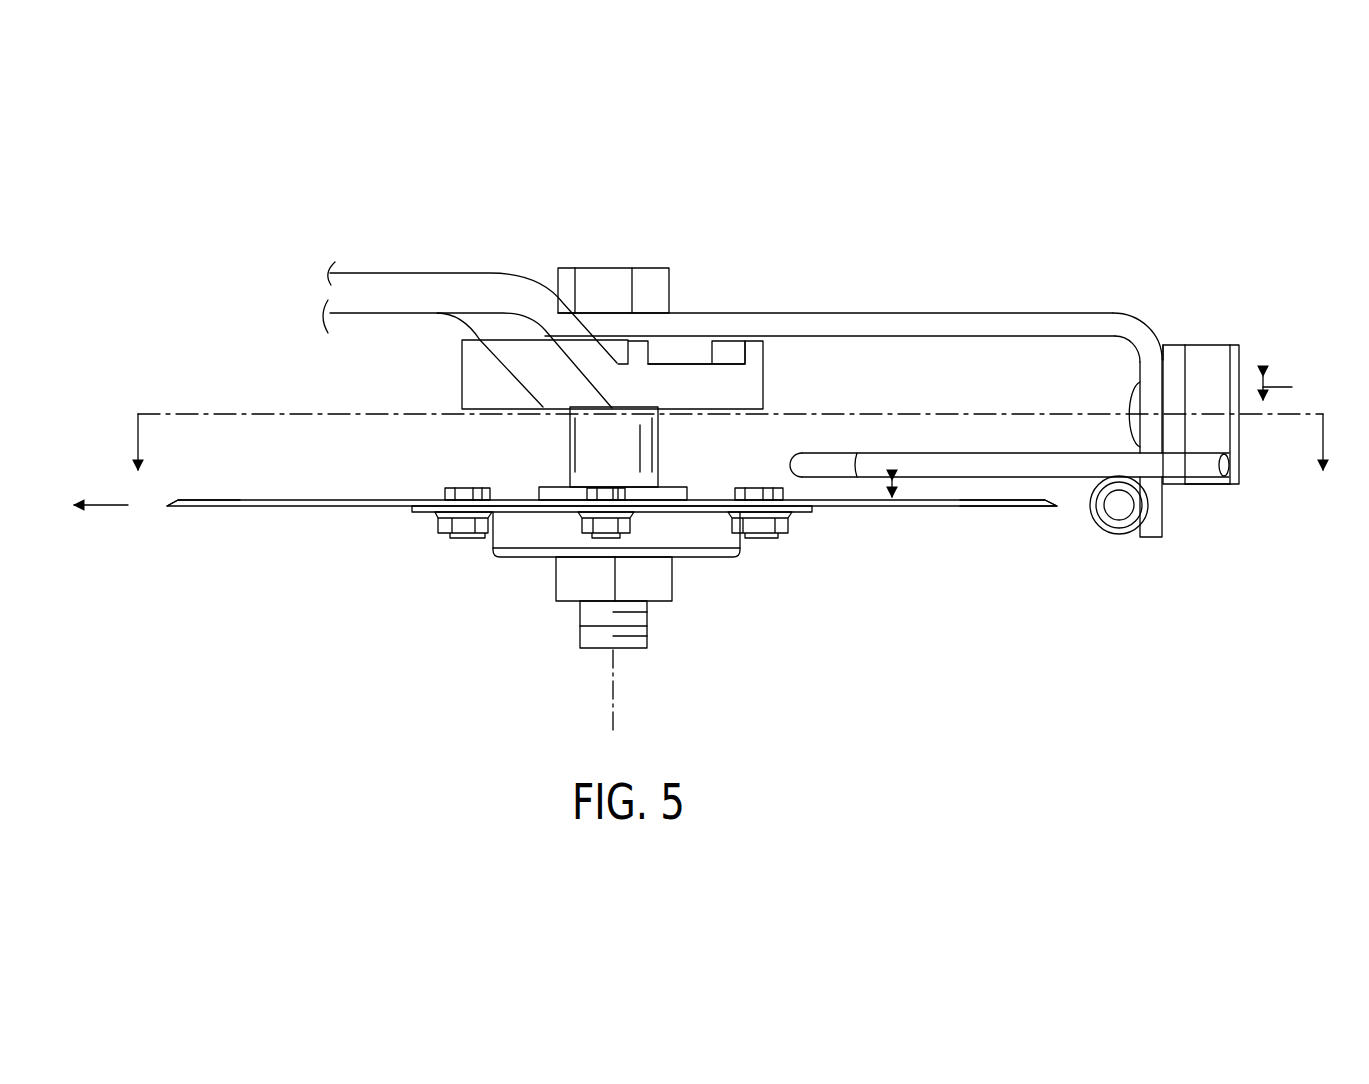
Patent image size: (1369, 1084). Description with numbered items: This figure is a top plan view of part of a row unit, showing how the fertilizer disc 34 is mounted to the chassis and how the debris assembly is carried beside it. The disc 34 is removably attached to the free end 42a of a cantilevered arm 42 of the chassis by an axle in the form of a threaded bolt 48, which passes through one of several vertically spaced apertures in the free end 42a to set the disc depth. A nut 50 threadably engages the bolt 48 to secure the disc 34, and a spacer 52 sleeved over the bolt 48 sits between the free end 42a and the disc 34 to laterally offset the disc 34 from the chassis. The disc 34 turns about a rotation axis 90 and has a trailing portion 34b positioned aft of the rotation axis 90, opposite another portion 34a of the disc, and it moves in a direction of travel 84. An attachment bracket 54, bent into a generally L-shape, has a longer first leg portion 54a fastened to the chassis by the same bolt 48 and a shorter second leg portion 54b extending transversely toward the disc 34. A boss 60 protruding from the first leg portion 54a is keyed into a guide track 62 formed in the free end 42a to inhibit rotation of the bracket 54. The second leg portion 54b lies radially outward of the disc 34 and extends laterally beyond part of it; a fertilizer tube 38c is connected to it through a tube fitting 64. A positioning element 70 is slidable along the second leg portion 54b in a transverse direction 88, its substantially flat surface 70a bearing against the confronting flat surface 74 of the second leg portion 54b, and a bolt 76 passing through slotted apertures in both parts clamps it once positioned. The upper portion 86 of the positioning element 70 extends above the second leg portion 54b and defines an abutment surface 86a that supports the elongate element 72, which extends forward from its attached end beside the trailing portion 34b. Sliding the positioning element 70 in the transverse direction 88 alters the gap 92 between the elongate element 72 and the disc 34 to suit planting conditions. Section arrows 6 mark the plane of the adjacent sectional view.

The fertilizer disc 34 is at (328, 506).
The first end of plate 34a is at (187, 507).
The trailing portion of the disc 34b is at (852, 508).
The fertilizer tube 38c is at (1120, 532).
The cantilevered arm 42 is at (473, 293).
The free end of the cantilevered arm 42a is at (473, 380).
The threaded bolt 48 is at (605, 283).
The nut 50 is at (568, 577).
The spacer 52 is at (593, 443).
The attachment bracket 54 is at (1058, 312).
The first leg portion 54a is at (826, 312).
The second leg portion 54b is at (1165, 515).
The boss 60 is at (685, 348).
The guide track 62 is at (727, 350).
The tube fitting 64 is at (1102, 508).
The positioning element 70 is at (1223, 370).
The substantially flat surface 70a is at (1163, 372).
The elongate element 72 is at (872, 453).
The substantially flat surface 74 is at (1160, 380).
The bolt 76 is at (1128, 400).
The direction of travel 84 is at (108, 507).
The upper portion of the positioning element 86 is at (1219, 343).
The abutment surface 86a is at (1212, 435).
The transverse direction 88 is at (1292, 387).
The rotation axis 90 is at (605, 692).
The gap 92 is at (893, 488).
The section line 6- 6 is at (730, 447).